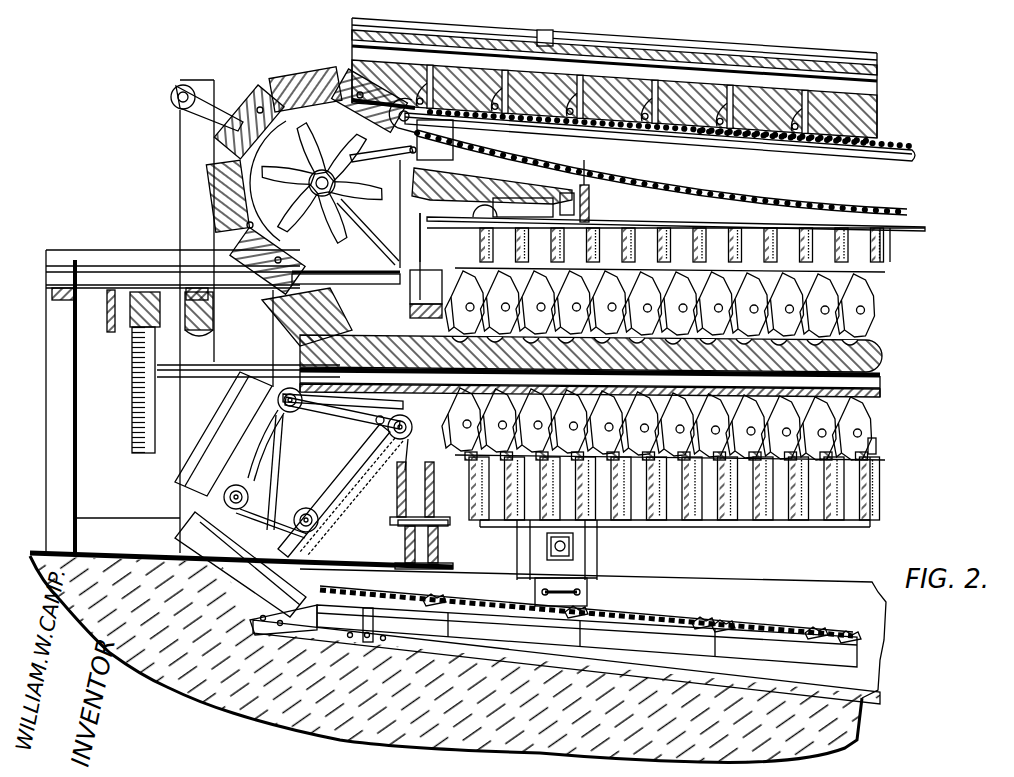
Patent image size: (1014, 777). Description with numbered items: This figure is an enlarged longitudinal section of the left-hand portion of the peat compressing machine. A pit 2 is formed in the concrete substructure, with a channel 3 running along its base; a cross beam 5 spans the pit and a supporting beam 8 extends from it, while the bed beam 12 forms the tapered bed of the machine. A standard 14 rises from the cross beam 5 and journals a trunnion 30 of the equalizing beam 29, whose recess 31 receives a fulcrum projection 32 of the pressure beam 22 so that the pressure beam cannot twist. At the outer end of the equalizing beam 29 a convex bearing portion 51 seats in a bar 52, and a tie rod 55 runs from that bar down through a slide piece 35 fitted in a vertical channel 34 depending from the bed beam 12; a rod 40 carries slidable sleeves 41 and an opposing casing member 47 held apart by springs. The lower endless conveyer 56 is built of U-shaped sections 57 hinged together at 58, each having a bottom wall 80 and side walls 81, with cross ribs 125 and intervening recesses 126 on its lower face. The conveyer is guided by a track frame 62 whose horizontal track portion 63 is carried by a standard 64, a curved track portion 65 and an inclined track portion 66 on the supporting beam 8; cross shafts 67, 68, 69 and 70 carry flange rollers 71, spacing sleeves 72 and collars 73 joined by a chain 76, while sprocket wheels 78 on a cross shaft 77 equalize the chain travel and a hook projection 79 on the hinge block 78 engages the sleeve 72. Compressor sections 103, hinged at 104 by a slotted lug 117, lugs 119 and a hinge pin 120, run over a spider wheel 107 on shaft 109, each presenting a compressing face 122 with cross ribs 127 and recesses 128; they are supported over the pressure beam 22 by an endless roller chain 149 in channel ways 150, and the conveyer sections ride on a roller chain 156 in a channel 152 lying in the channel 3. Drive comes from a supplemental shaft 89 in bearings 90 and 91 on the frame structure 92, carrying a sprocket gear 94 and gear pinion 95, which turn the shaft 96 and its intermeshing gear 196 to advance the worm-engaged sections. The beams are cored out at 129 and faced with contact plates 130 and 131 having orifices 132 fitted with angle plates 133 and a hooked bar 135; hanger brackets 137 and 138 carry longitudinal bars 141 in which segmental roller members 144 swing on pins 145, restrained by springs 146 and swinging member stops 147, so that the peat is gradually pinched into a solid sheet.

The pit 2 is at (873, 617).
The channel 3 is at (155, 665).
The cross beam 5 is at (400, 545).
The supporting beam 8 is at (128, 560).
The bed beam 12 is at (866, 524).
The standard 14 is at (368, 236).
The pressure beam 22 is at (880, 247).
The equalizing beam 29 is at (493, 172).
The trunnion 30 is at (420, 208).
The recess 31 is at (540, 180).
The fulcrum projection 32 is at (482, 207).
The vertical channel 34 is at (585, 552).
The slide piece 35 is at (592, 588).
The rod 40 is at (545, 548).
The sleeve 41 is at (573, 545).
The casing member 47 is at (530, 580).
The convex bearing portion 51 is at (620, 182).
The bar 52 is at (595, 200).
The tie rod 55 is at (655, 188).
The lower endless conveyer 56 is at (590, 178).
The conveyer section 57 is at (880, 393).
The hinge connection 58 is at (720, 630).
The track frame 62 is at (277, 470).
The horizontal track portion 63 is at (300, 415).
The standard 64 is at (278, 492).
The curved track portion 65 is at (210, 528).
The inclined track portion 66 is at (340, 498).
The cross shaft 67 is at (411, 428).
The cross shaft 68 is at (287, 472).
The cross shaft 69 is at (205, 497).
The cross shaft 70 is at (305, 530).
The flange roller 71 is at (408, 463).
The spacing sleeve 72 is at (355, 498).
The collar 73 is at (401, 457).
The chain 76 is at (347, 495).
The cross shaft 77 is at (370, 420).
The sprocket wheel 78 is at (700, 620).
The hook projection 79 is at (843, 630).
The bottom wall 80 is at (880, 407).
The side wall 81 is at (845, 672).
The supplemental shaft 89 is at (98, 318).
The bearing 90 is at (62, 308).
The bearing 91 is at (200, 312).
The frame structure 92 is at (46, 438).
The sprocket gear 94 is at (112, 290).
The gear pinion 95 is at (143, 292).
The shaft 96 is at (268, 365).
The compressor section 103 is at (875, 347).
The hinge connection 104 is at (812, 97).
The spider wheel 107 is at (305, 130).
The shaft 109 is at (255, 180).
The lug 117 is at (800, 105).
The lug 119 is at (855, 108).
The hinge pin 120 is at (805, 110).
The compressing face 122 is at (880, 378).
The cross rib 125 is at (768, 630).
The recess 126 is at (748, 630).
The cross rib 127 is at (335, 325).
The recess 128 is at (275, 254).
The cored-out space 129 is at (880, 277).
The contact plate 130 is at (880, 460).
The contact plate 131 is at (890, 292).
The orifice 132 is at (367, 273).
The angle plate 133 is at (427, 294).
The bar 135 is at (855, 235).
The hanger bracket 137 is at (346, 287).
The bracket 138 is at (445, 489).
The longitudinal bar 141 is at (875, 442).
The segmental roller member 144 is at (853, 330).
The pin 145 is at (862, 312).
The spring 146 is at (823, 243).
The swinging member 147 is at (889, 452).
The endless roller chain 149 is at (910, 147).
The channel way 150 is at (920, 157).
The channel 152 is at (880, 690).
The roller chain 156 is at (250, 612).
The gear 196 is at (132, 413).